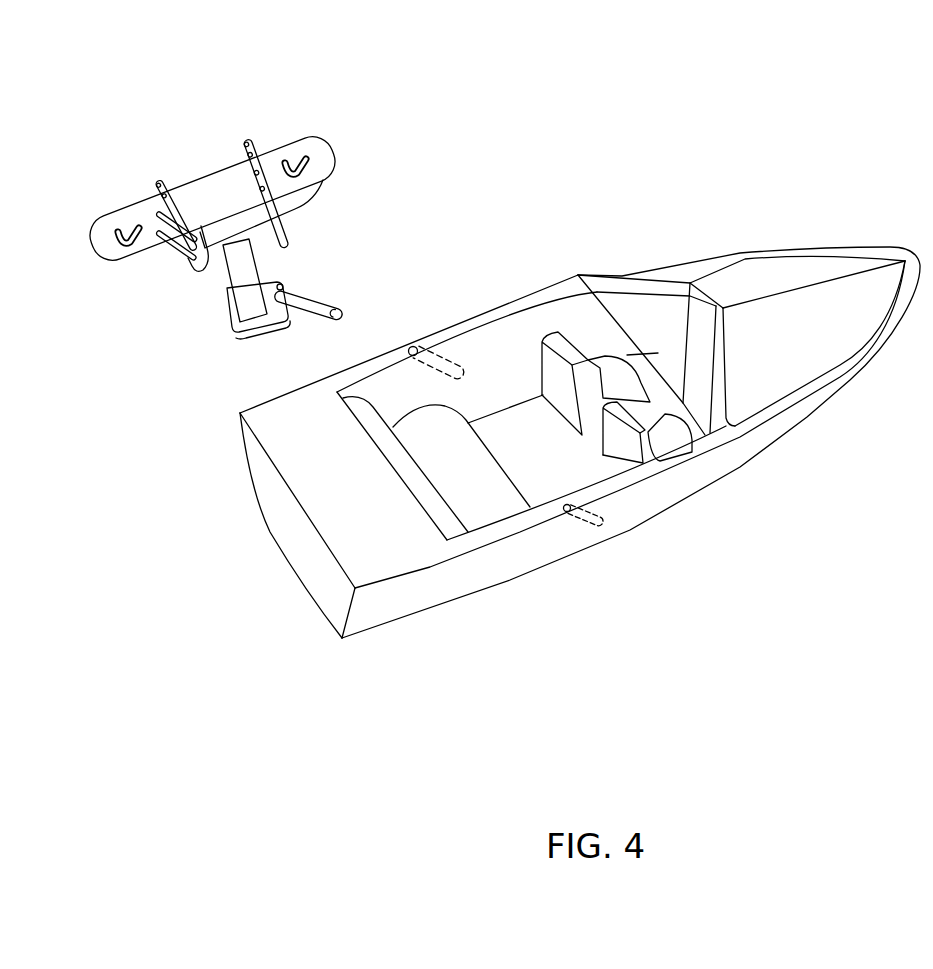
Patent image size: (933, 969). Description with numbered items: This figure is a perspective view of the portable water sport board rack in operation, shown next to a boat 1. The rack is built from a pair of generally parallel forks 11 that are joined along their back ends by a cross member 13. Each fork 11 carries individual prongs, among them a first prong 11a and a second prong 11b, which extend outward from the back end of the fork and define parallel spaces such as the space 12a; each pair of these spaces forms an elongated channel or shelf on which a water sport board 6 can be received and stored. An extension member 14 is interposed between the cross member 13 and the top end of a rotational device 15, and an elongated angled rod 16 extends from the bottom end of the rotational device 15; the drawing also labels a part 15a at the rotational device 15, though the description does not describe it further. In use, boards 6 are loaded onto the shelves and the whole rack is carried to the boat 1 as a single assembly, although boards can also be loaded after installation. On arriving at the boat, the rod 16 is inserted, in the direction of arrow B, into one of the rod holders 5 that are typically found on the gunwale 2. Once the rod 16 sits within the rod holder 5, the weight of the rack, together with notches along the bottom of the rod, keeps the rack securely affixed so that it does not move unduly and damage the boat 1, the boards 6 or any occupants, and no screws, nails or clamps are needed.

The boat 1 is at (357, 500).
The gunwale 2 is at (495, 355).
The rod holder 5 is at (460, 373).
The water sport board 6 is at (222, 205).
The fork 11 is at (291, 213).
The prong 11a is at (250, 138).
The prong 11b is at (253, 153).
The parallel space 12a is at (198, 152).
The cross member 13 is at (200, 257).
The extension member 14 is at (247, 282).
The rotational device 15 is at (245, 333).
The arm 15a is at (313, 307).
The angled rod 16 is at (283, 288).
The arrow B is at (378, 335).